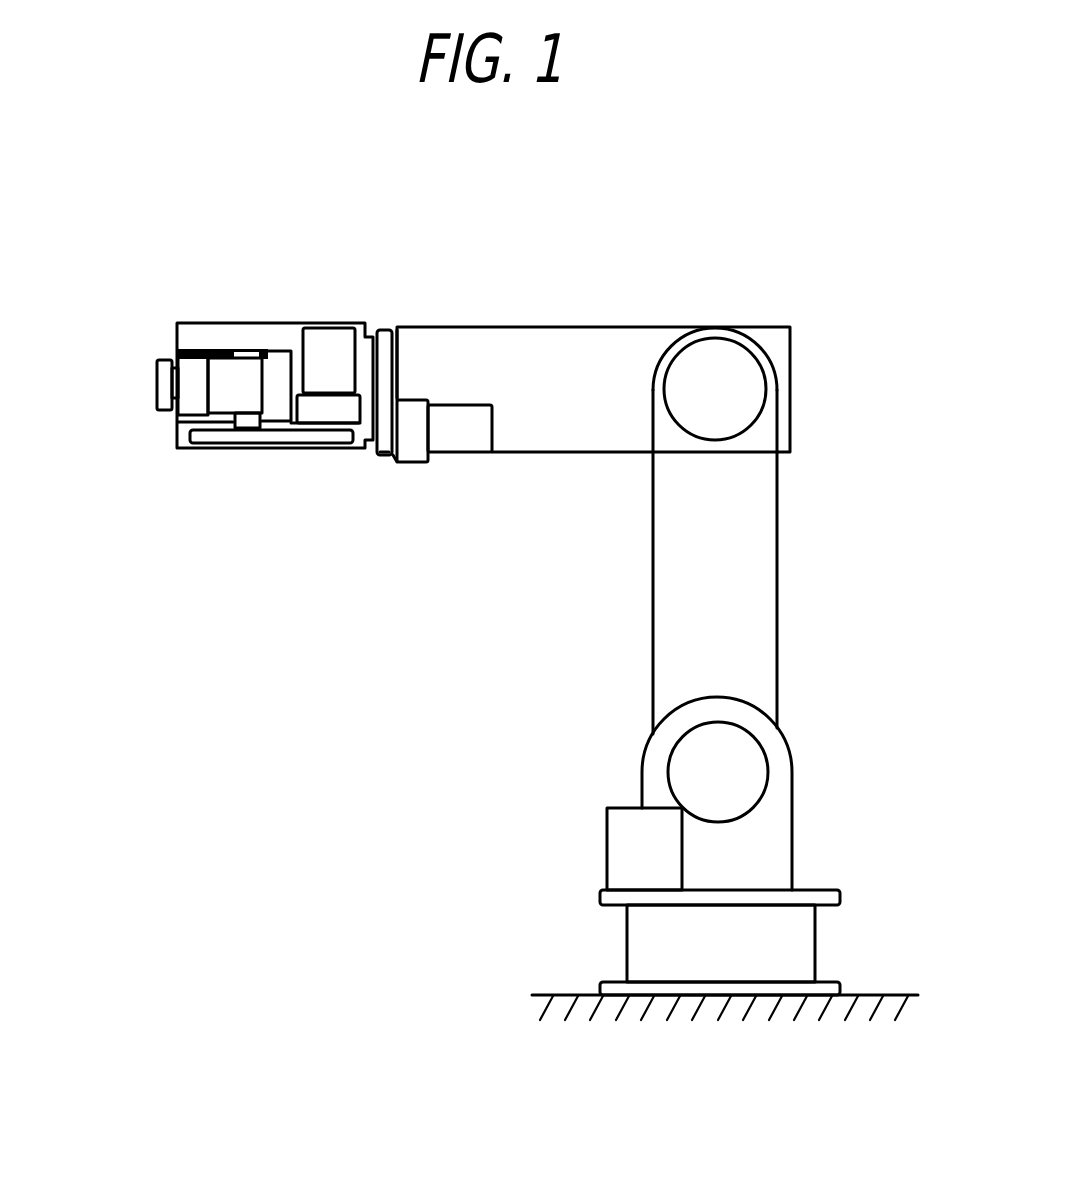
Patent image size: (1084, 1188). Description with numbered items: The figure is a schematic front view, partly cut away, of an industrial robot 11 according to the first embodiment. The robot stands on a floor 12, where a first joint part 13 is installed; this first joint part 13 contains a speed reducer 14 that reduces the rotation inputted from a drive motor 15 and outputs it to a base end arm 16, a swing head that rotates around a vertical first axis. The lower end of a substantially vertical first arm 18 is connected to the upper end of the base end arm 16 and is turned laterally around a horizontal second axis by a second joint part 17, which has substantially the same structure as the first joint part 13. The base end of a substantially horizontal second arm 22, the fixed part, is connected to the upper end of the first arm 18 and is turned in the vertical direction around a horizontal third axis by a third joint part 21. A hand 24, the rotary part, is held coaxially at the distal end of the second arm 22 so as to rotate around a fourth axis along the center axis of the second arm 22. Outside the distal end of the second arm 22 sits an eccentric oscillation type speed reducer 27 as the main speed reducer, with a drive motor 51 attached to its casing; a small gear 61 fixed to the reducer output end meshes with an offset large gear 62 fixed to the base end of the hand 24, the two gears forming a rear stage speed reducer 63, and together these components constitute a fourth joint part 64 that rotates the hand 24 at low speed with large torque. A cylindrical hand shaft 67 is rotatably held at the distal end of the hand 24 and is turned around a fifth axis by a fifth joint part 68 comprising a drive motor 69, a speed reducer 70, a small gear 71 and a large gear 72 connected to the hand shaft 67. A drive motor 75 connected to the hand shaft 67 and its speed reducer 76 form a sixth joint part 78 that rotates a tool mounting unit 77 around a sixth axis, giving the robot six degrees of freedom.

The industrial robot 11 is at (788, 583).
The floor 12 is at (887, 995).
The first joint part 13 is at (620, 957).
The speed reducer 14 is at (635, 920).
The drive motor 15 is at (618, 850).
The base end arm 16 is at (782, 833).
The second joint part 17 is at (682, 767).
The first arm 18 is at (663, 593).
The third joint part 21 is at (715, 350).
The second arm 22 is at (577, 335).
The hand 24 is at (258, 335).
The eccentric oscillation type speed reducer 27 is at (408, 462).
The drive motor 51 is at (483, 453).
The small gear 61 is at (383, 455).
The large gear 62 is at (383, 335).
The rear stage speed reducer 63 is at (407, 363).
The fourth joint part 64 is at (397, 472).
The hand shaft 67 is at (250, 430).
The fifth joint part 68 is at (307, 323).
The drive motor 69 is at (332, 340).
The speed reducer 70 is at (332, 418).
The small gear 71 is at (318, 428).
The large gear 72 is at (207, 447).
The drive motor 75 is at (222, 372).
The speed reducer 76 is at (193, 372).
The tool mounting unit 77 is at (157, 385).
The sixth joint part 78 is at (173, 433).